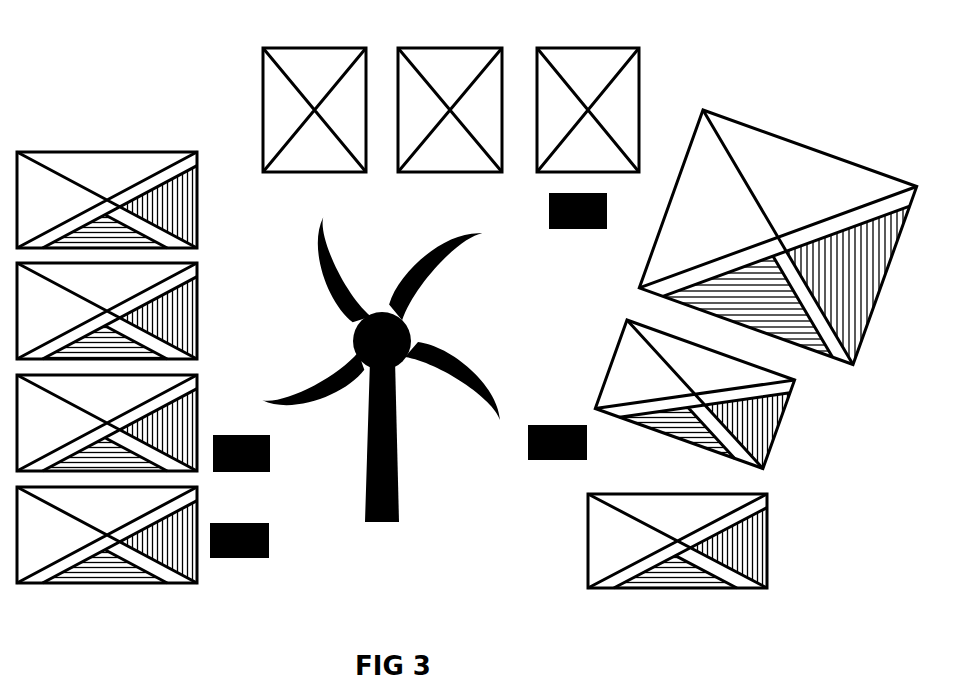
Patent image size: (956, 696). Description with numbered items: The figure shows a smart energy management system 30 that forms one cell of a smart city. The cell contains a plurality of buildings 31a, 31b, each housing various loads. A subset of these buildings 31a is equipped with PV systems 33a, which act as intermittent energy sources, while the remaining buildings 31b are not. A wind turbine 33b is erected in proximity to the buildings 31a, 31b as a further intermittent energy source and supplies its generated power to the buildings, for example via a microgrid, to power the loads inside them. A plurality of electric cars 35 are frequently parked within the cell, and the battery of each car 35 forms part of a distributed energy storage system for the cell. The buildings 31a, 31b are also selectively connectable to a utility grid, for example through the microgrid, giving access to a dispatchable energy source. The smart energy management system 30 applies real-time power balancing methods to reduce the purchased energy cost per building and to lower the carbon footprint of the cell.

The smart energy management system 30 is at (720, 53).
The buildings equipped with PV systems 31a is at (642, 565).
The buildings 31b is at (440, 168).
The PV system 33a is at (673, 582).
The wind turbine 33b is at (375, 522).
The electric car 35 is at (582, 230).